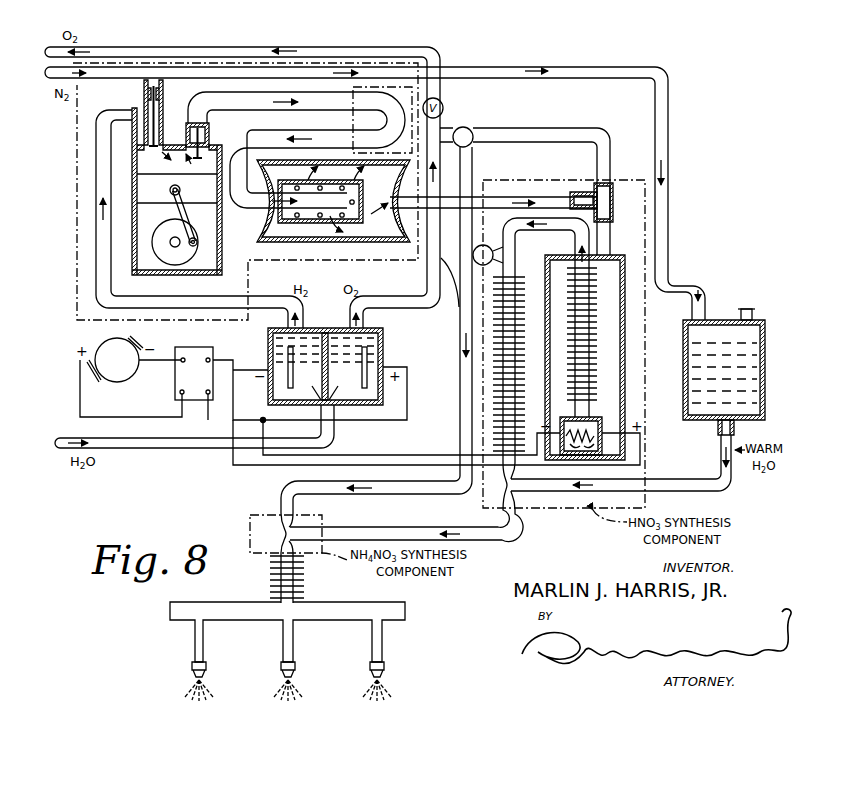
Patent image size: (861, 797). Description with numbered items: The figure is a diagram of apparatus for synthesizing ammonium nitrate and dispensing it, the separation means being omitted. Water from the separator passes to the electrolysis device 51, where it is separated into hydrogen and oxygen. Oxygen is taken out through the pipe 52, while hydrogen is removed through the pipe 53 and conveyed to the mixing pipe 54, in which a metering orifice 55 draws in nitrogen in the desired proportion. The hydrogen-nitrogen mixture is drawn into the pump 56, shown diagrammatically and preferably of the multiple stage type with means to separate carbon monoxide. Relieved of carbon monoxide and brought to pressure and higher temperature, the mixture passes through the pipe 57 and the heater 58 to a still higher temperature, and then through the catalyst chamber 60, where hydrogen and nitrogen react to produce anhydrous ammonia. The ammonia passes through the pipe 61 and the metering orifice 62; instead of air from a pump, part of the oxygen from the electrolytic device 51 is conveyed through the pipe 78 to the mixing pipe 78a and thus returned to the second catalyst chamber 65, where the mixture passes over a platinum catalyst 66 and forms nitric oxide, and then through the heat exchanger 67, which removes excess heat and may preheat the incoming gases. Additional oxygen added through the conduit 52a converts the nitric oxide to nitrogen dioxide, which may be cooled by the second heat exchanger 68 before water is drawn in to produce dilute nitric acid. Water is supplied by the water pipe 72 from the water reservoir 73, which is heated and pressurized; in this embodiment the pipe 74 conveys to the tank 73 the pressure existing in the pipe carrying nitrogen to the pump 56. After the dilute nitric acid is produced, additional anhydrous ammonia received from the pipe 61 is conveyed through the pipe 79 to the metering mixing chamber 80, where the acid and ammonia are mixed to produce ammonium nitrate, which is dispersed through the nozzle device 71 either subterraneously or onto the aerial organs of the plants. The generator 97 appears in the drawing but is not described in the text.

The electrolysis device 51 is at (384, 352).
The pipe 52 is at (393, 296).
The conduit 52a is at (445, 292).
The pipe 53 is at (185, 302).
The mixing pipe 54 is at (162, 118).
The metering orifice 55 is at (144, 93).
The pump 56 is at (145, 254).
The pipe 57 is at (252, 106).
The heater 58 is at (386, 87).
The catalyst chamber 60 is at (262, 233).
The pipe 61 is at (452, 197).
The metering orifice 62 is at (581, 193).
The second catalyst chamber 65 is at (628, 360).
The platinum catalyst 66 is at (598, 421).
The heat exchanger 67 is at (566, 343).
The second heat exchanger 68 is at (522, 309).
The nozzle device 71 is at (244, 605).
The water pipe 72 is at (667, 479).
The water reservoir 73 is at (752, 397).
The pipe 74 is at (584, 67).
The pipe 78 is at (521, 127).
The mixing pipe 78a is at (609, 240).
The pipe 79 is at (459, 402).
The metering mixing chamber 80 is at (250, 532).
The generator 97 is at (126, 372).